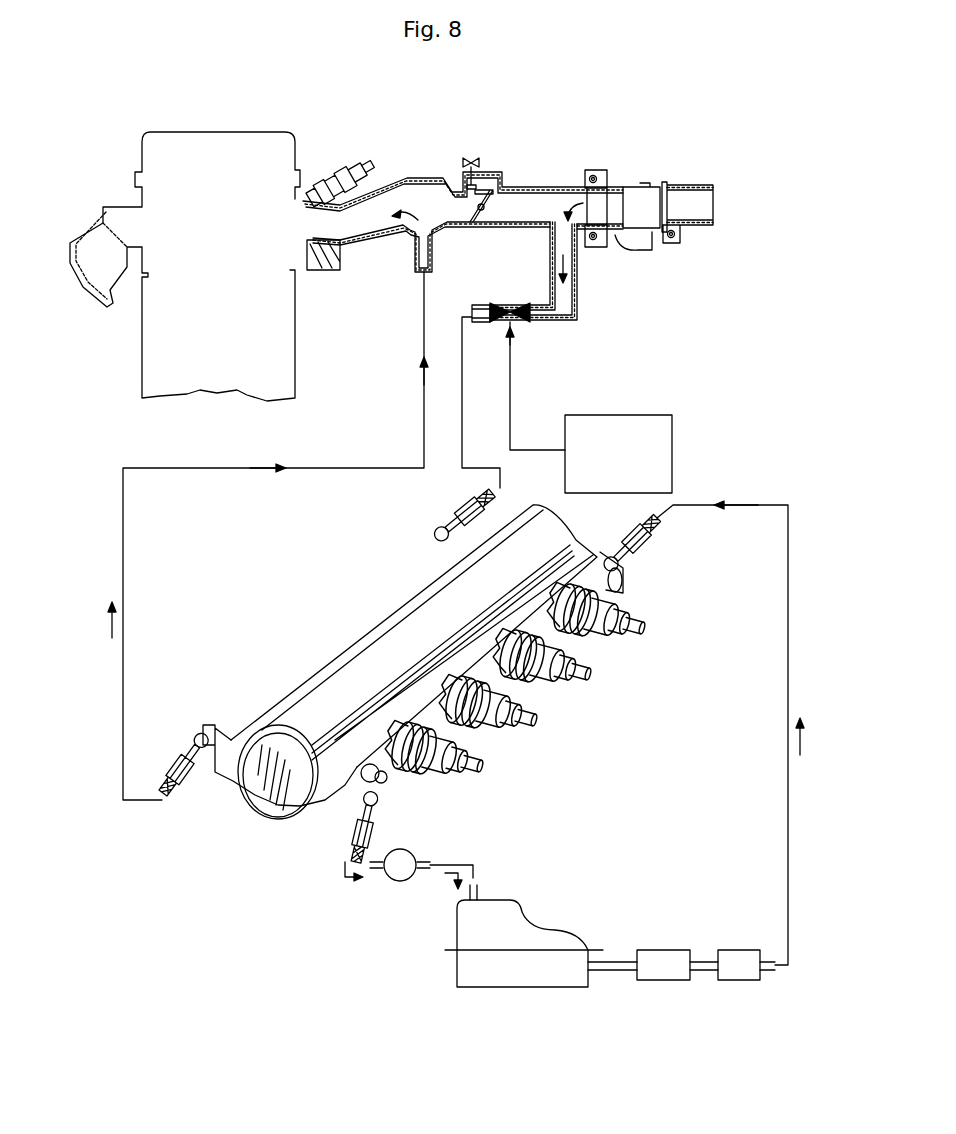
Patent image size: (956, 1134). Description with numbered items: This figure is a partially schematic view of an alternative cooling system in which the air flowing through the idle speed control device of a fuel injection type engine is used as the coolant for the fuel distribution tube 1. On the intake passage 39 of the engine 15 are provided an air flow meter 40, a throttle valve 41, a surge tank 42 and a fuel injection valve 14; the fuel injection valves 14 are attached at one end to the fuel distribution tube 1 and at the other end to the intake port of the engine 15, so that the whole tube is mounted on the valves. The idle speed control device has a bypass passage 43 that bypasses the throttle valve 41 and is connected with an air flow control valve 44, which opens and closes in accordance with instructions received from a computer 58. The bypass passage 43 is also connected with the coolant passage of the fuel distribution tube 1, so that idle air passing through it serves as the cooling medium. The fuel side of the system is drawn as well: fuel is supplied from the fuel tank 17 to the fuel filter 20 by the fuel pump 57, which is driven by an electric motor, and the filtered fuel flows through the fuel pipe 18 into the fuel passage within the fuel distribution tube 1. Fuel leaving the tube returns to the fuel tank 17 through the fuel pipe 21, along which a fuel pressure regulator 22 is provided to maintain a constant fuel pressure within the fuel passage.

The fuel distribution tube 1 is at (537, 506).
The fuel injection valve 14 is at (338, 176).
The engine 15 is at (223, 131).
The fuel tank 17 is at (537, 972).
The fuel pipe 18 is at (788, 664).
The fuel filter 20 is at (745, 970).
The fuel pipe 21 is at (474, 864).
The fuel pressure regulator 22 is at (397, 875).
The intake passage 39 is at (518, 186).
The air flow meter 40 is at (643, 183).
The throttle valve 41 is at (486, 226).
The surge tank 42 is at (428, 176).
The bypass passage 43 is at (580, 308).
The air flow control valve 44 is at (518, 330).
The fuel pump 57 is at (667, 969).
The computer 58 is at (641, 414).